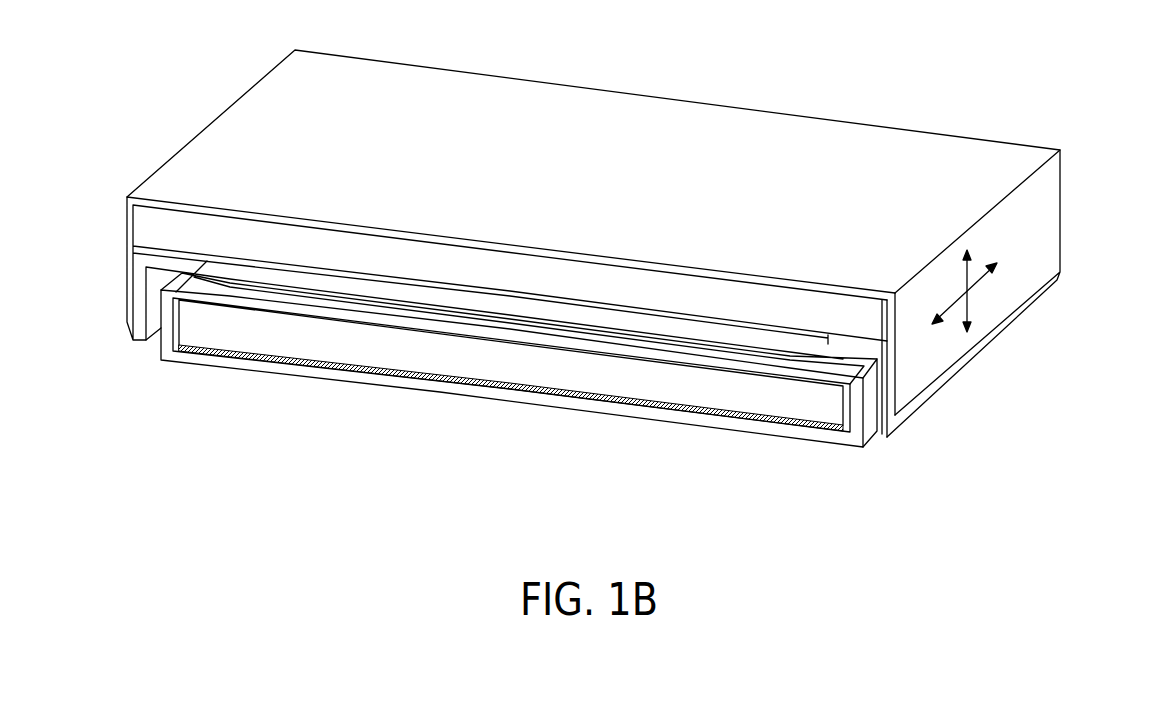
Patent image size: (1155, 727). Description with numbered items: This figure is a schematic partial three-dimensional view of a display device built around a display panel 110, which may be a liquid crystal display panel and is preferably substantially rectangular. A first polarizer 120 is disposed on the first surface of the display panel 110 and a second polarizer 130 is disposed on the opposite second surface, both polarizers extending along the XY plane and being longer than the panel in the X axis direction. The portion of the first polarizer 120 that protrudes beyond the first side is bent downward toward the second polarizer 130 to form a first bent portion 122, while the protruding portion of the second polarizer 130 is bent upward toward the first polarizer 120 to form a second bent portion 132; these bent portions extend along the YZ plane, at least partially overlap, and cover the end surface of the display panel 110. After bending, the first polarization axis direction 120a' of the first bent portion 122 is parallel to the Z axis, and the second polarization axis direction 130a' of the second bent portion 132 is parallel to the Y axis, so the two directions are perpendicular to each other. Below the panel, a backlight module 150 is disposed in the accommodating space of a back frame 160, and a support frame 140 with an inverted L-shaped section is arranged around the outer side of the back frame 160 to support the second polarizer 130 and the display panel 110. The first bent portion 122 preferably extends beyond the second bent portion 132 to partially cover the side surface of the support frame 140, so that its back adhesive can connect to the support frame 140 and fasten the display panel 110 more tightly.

The display panel 110 is at (151, 219).
The first polarizer 120 is at (960, 162).
The first bent portion 122 is at (1042, 215).
The second polarizer 130 is at (718, 318).
The second bent portion 132 is at (893, 320).
The support frame 140 is at (880, 393).
The backlight module 150 is at (470, 356).
The back frame 160 is at (838, 443).
The second polarization axis direction 130a' is at (999, 284).
The first polarization axis direction 120a' is at (997, 333).